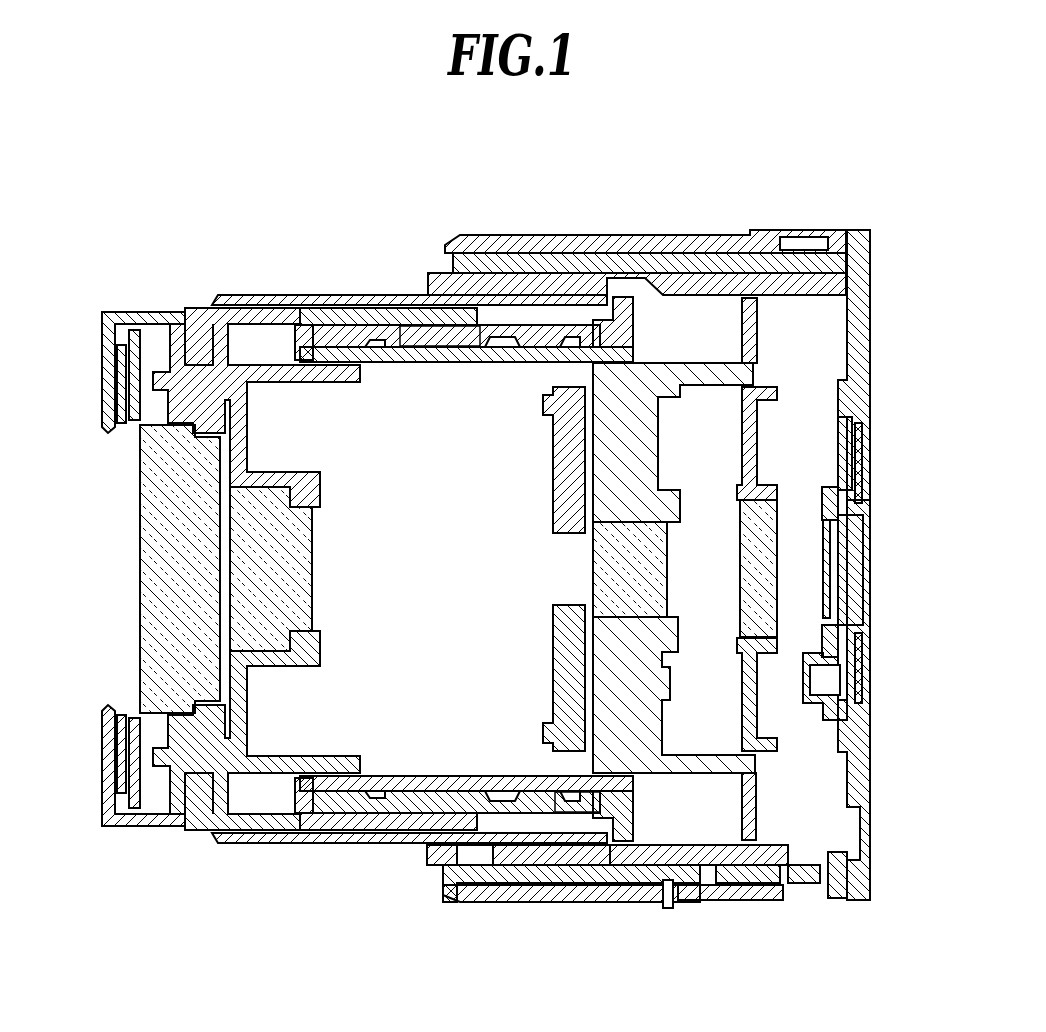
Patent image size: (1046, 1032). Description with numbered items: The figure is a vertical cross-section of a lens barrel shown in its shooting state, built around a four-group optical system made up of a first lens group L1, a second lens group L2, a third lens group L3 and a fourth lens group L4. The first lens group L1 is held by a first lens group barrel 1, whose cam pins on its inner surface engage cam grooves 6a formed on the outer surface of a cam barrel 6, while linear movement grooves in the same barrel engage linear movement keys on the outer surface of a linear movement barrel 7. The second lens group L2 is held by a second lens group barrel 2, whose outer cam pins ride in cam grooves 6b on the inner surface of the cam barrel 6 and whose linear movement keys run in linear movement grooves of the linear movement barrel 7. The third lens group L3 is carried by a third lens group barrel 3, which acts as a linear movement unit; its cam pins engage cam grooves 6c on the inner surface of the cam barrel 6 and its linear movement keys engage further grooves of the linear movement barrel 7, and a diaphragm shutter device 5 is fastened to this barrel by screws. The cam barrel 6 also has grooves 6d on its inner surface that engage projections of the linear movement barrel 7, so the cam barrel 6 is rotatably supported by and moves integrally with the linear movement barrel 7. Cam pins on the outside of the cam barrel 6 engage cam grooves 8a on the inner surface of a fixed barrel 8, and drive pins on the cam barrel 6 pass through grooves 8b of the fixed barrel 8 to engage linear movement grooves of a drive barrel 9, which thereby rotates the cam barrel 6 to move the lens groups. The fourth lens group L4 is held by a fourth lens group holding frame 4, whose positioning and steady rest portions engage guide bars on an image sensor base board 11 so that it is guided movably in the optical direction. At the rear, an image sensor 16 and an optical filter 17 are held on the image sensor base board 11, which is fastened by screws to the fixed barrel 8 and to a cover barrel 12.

The first lens group barrel 1 is at (170, 377).
The second lens group barrel 2 is at (257, 362).
The third lens group barrel 3 is at (688, 368).
The fourth lens group holding frame 4 is at (757, 445).
The diaphragm shutter device 5 is at (553, 458).
The cam barrel 6 is at (385, 842).
The cam grooves 6a is at (583, 800).
The cam grooves 6b is at (422, 336).
The cam grooves 6c is at (558, 337).
The grooves 6d is at (360, 332).
The linear movement barrel 7 is at (302, 795).
The fixed barrel 8 is at (842, 237).
The cam grooves 8a is at (528, 855).
The grooves 8b is at (455, 888).
The drive barrel 9 is at (722, 882).
The image sensor base board 11 is at (866, 730).
The cover barrel 12 is at (752, 884).
The image sensor 16 is at (863, 537).
The optical filter 17 is at (838, 610).
The first lens group L1 is at (150, 542).
The second lens group L2 is at (240, 602).
The third lens group L3 is at (593, 548).
The fourth lens group L4 is at (775, 522).